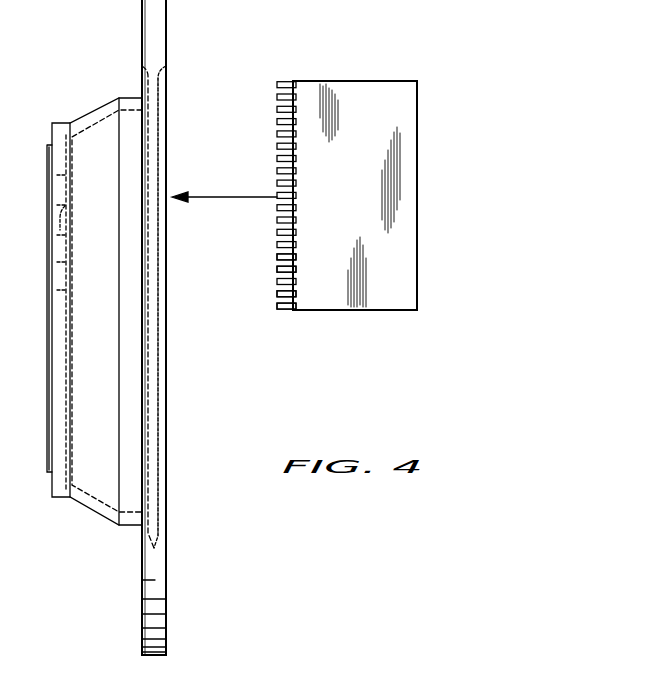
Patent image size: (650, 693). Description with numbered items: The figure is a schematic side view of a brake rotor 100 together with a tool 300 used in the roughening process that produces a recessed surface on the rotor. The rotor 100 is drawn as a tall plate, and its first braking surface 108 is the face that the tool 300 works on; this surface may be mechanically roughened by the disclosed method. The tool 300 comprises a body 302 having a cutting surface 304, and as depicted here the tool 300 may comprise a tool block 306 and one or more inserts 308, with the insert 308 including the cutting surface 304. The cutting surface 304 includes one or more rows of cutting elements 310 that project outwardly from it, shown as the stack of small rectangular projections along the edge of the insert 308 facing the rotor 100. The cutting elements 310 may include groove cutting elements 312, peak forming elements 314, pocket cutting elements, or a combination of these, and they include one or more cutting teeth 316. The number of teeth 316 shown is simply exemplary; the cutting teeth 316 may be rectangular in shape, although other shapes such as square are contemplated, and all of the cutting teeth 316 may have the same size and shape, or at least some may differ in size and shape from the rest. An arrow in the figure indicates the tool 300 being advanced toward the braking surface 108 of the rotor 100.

The brake rotor 100 is at (166, 570).
The first braking surface 108 is at (166, 518).
The tool 300 is at (420, 231).
The body 302 is at (373, 311).
The cutting surface 304 is at (292, 311).
The tool block 306 is at (366, 231).
The insert 308 is at (293, 80).
The cutting elements 310 is at (278, 293).
The groove cutting elements 312 is at (281, 307).
The peak forming elements 314 is at (277, 236).
The cutting teeth 316 is at (277, 269).